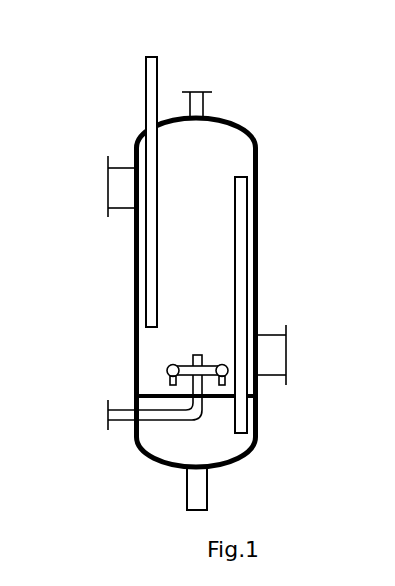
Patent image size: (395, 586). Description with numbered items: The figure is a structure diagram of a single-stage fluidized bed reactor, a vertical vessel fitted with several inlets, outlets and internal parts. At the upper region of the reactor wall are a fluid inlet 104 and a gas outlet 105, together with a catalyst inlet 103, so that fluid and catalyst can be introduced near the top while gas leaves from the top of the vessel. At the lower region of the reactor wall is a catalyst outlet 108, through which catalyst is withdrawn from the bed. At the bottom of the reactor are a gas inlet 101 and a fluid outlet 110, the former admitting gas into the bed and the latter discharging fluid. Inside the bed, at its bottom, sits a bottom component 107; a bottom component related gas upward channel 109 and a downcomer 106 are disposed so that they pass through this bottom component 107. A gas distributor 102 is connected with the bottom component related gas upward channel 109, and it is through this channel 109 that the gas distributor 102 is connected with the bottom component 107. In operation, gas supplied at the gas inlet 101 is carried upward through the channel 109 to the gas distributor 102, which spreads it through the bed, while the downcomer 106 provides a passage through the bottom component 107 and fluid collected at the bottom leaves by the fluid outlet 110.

The gas inlet 101 is at (107, 410).
The gas distributor 102 is at (169, 364).
The catalyst inlet 103 is at (107, 188).
The fluid inlet 104 is at (146, 87).
The gas outlet 105 is at (212, 92).
The downcomer 106 is at (247, 185).
The bottom component 107 is at (222, 393).
The catalyst outlet 108 is at (287, 360).
The bottom component related gas upward channel 109 is at (202, 415).
The fluid outlet 110 is at (208, 492).